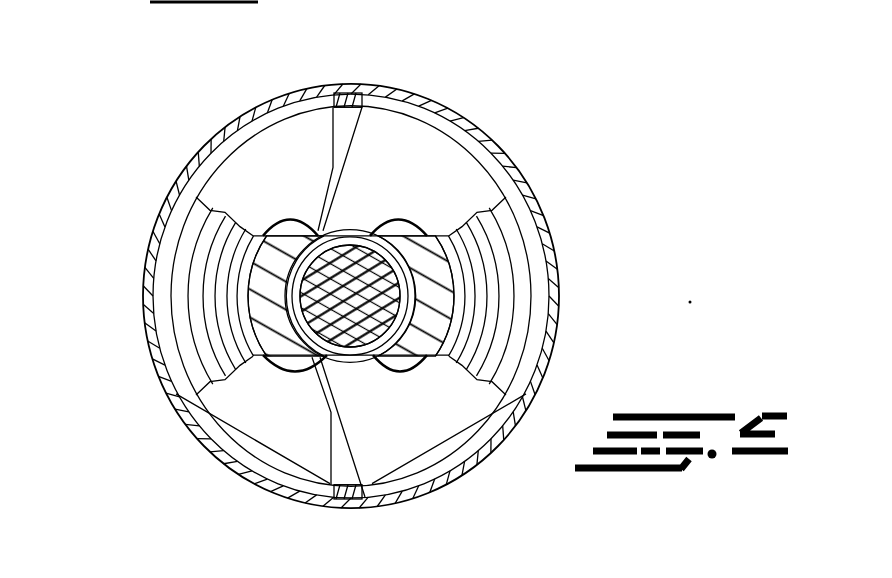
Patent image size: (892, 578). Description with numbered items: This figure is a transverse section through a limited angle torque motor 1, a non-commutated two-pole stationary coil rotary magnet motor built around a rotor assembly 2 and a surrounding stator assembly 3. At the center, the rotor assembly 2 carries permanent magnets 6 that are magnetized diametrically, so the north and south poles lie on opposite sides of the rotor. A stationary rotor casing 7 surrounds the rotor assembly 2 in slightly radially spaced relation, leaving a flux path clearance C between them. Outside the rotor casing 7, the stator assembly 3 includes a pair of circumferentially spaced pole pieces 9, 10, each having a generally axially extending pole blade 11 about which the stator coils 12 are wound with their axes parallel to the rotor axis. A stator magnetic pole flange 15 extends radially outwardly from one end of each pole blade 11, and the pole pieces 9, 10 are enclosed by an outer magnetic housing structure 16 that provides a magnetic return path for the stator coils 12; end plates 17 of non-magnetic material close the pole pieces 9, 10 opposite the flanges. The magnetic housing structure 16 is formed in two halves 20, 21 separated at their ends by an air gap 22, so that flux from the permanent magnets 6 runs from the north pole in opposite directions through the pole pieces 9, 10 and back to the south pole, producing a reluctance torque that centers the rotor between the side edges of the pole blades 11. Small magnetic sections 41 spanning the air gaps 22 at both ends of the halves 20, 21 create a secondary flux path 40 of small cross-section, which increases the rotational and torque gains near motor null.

The limited angle torque motor 1 is at (490, 115).
The rotor assembly 2 is at (322, 230).
The stator assembly 3 is at (192, 307).
The permanent magnets 6 is at (358, 240).
The rotor casing 7 is at (358, 236).
The pole piece 9 is at (256, 228).
The pole piece 10 is at (432, 370).
The pole blade 11 is at (438, 243).
The stator coils 12 is at (503, 279).
The stator magnetic pole flange 15 is at (412, 135).
The outer magnetic housing structure 16 is at (503, 187).
The end plates 17 is at (282, 142).
The magnetic housing structure half 20 is at (158, 263).
The magnetic housing structure half 21 is at (528, 237).
The air gap 22 is at (365, 100).
The secondary flux path 40 is at (332, 108).
The small magnetic sections 41 is at (347, 95).
The flux path clearance C is at (357, 357).